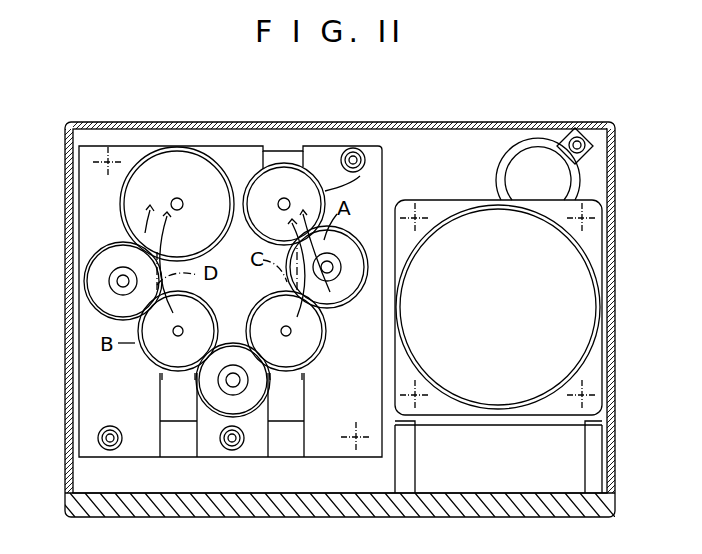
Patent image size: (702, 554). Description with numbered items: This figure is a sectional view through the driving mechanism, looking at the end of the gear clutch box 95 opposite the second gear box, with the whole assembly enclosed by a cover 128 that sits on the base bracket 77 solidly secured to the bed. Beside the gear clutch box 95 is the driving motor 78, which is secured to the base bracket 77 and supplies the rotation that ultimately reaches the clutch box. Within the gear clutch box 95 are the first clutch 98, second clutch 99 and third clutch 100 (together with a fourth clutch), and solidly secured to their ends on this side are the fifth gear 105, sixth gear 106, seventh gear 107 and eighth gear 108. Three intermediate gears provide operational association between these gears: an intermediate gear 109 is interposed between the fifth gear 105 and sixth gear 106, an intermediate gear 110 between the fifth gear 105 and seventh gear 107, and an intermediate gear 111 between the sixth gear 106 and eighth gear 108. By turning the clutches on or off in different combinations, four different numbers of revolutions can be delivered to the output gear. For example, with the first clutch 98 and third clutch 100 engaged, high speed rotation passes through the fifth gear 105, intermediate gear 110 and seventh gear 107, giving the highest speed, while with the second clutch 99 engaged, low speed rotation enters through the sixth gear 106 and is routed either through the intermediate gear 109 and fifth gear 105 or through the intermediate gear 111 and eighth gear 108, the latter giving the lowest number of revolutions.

The base bracket 77 is at (556, 500).
The driving motor 78 is at (592, 262).
The gear clutch box 95 is at (232, 152).
The first clutch 98 is at (291, 377).
The second clutch 99 is at (171, 390).
The third clutch 100 is at (287, 160).
The fifth gear 105 is at (311, 355).
The sixth gear 106 is at (150, 355).
The seventh gear 107 is at (360, 176).
The eighth gear 108 is at (120, 212).
The intermediate gear 109 is at (256, 422).
The intermediate gear 110 is at (338, 306).
The intermediate gear 111 is at (86, 300).
The cover 128 is at (396, 124).